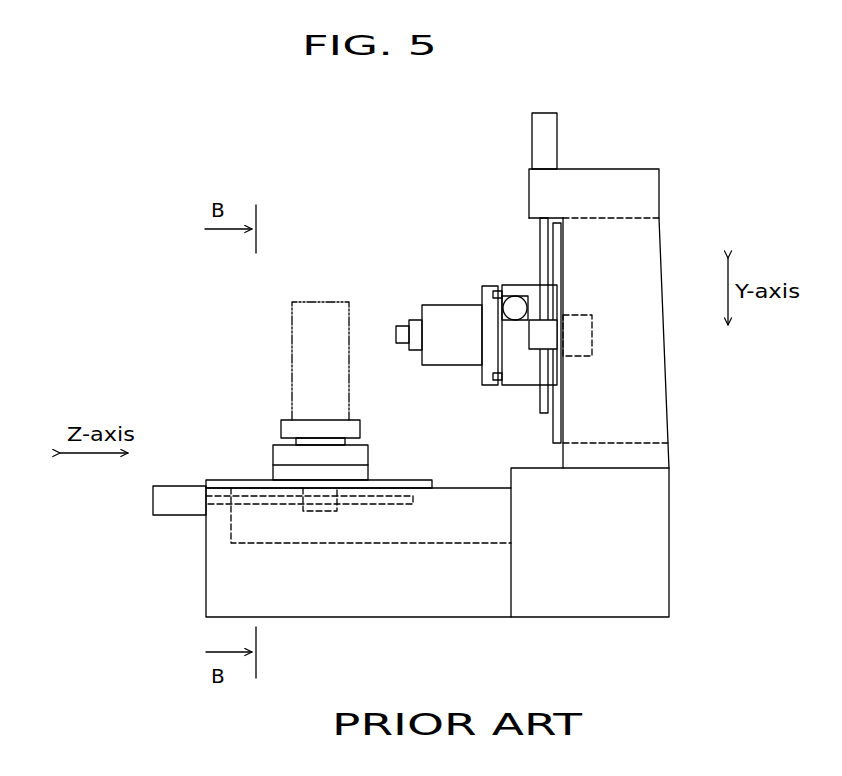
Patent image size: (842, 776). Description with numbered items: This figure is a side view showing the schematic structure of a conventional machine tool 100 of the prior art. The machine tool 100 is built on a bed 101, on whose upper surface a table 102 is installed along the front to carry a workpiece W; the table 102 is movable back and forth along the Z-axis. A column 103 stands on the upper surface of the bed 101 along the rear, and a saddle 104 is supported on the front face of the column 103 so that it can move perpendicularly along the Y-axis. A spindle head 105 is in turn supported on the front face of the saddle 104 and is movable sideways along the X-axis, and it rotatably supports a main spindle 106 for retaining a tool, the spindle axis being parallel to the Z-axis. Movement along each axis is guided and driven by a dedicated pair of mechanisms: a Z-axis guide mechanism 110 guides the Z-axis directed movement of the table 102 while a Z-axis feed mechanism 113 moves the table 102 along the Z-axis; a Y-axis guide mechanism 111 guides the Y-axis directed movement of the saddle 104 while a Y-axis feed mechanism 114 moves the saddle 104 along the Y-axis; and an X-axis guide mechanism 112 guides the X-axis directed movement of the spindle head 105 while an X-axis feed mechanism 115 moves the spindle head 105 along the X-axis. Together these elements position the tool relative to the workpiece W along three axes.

The machine tool 100 is at (193, 166).
The bed 101 is at (215, 594).
The table 102 is at (283, 425).
The column 103 is at (653, 192).
The saddle 104 is at (518, 380).
The spindle head 105 is at (447, 308).
The main spindle 106 is at (400, 330).
The Z-axis guide mechanism 110 is at (243, 482).
The Y-axis guide mechanism 111 is at (560, 425).
The X-axis guide mechanism 112 is at (493, 291).
The Z-axis feed mechanism 113 is at (135, 504).
The Y-axis feed mechanism 114 is at (587, 139).
The X-axis feed mechanism 115 is at (513, 273).
The workpiece W is at (297, 343).